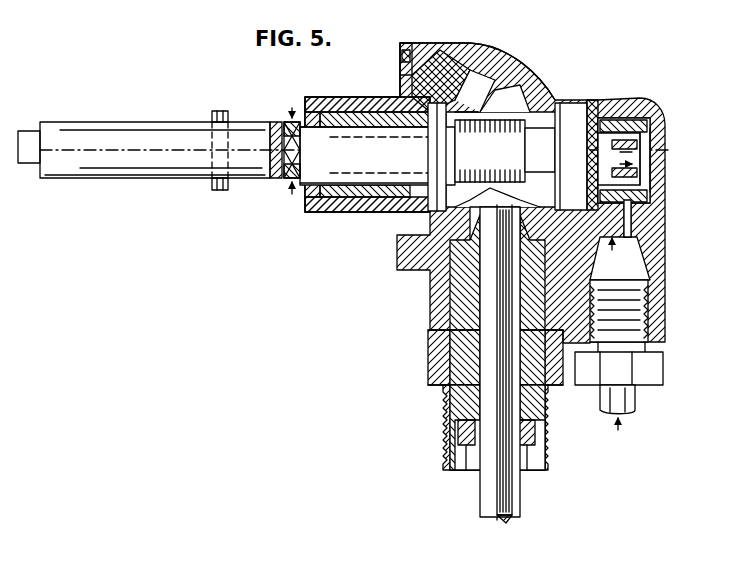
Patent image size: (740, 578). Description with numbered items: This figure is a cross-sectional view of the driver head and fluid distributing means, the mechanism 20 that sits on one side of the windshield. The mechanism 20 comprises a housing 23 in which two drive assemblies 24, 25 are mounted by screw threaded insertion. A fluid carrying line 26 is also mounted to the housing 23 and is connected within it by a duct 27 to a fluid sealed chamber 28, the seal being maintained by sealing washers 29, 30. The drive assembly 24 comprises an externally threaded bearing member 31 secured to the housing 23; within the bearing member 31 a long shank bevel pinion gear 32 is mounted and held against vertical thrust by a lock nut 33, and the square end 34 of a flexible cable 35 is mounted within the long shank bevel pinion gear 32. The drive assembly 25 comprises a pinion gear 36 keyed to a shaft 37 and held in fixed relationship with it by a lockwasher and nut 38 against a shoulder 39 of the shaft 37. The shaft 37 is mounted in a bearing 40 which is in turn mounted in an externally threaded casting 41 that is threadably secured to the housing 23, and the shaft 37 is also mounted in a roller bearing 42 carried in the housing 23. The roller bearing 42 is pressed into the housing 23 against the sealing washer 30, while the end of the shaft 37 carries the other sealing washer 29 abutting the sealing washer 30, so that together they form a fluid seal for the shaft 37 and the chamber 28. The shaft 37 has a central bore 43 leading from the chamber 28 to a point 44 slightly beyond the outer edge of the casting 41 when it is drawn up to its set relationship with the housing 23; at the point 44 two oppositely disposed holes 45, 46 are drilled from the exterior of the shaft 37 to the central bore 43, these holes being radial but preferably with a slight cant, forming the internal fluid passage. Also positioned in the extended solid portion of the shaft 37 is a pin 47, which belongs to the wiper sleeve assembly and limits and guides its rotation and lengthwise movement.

The mechanism 20 is at (636, 62).
The housing 23 is at (666, 243).
The drive assembly 24 is at (440, 418).
The drive assembly 25 is at (342, 90).
The fluid carrying line 26 is at (644, 410).
The duct 27 is at (633, 235).
The fluid sealed chamber 28 is at (640, 163).
The sealing washer 29 is at (609, 120).
The sealing washer 30 is at (594, 100).
The externally threaded bearing member 31 is at (455, 352).
The long shank bevel pinion gear 32 is at (463, 273).
The lock nut 33 is at (470, 472).
The square end 34 is at (508, 492).
The flexible cable 35 is at (489, 523).
The pinion gear 36 is at (466, 96).
The shaft 37 is at (172, 135).
The lockwasher and nut 38 is at (530, 93).
The shoulder 39 is at (430, 208).
The bearing 40 is at (352, 208).
The externally threaded casting 41 is at (305, 206).
The roller bearing 42 is at (566, 103).
The central bore 43 is at (396, 94).
The point 44 is at (272, 150).
The hole 45 is at (281, 128).
The hole 46 is at (282, 182).
The pin 47 is at (214, 195).